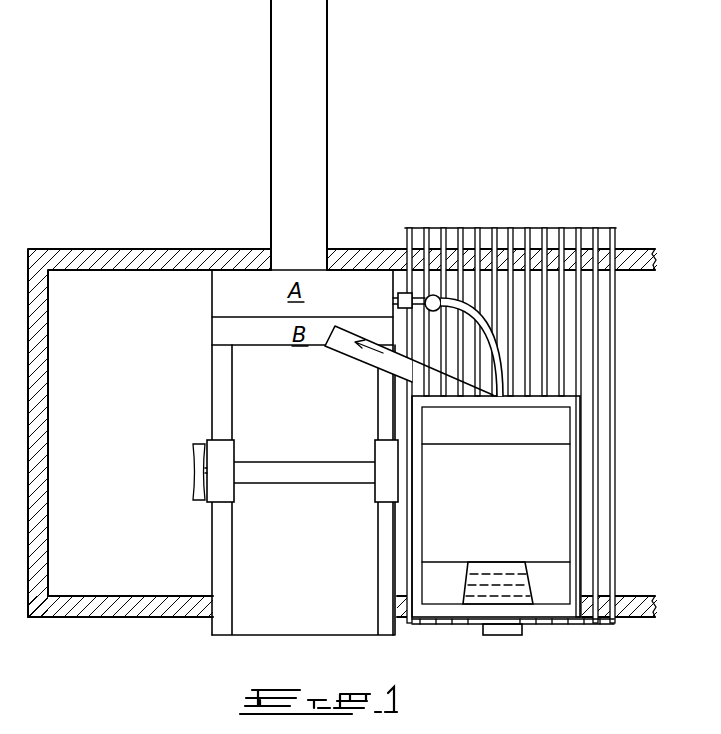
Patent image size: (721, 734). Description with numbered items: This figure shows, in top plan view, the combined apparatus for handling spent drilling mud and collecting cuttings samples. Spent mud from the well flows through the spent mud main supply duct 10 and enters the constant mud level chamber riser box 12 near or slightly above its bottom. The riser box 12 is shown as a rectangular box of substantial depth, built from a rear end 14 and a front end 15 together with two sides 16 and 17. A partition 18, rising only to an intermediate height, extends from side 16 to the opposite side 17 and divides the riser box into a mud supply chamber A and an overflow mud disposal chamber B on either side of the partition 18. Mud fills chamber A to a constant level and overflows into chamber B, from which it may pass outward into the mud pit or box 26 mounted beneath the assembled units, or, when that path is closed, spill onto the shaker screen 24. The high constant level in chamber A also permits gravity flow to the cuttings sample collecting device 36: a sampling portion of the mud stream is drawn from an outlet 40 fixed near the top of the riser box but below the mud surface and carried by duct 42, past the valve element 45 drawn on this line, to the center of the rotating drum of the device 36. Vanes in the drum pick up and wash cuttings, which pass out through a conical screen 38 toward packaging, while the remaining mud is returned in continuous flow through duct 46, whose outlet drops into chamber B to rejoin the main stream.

The spent mud main supply duct 10 is at (277, 69).
The constant mud level chamber riser box 12 is at (262, 303).
The rear end 14 is at (235, 270).
The front end 15 is at (215, 345).
The side 16 is at (211, 287).
The side 17 is at (393, 278).
The partition 18 is at (305, 318).
The shaker screen 24 is at (320, 561).
The mud pit or box 26 is at (164, 618).
The cuttings sample collecting device 36 is at (513, 498).
The conical screen 38 is at (464, 575).
The outlet 40 is at (393, 301).
The duct 42 is at (506, 381).
The valve 45 is at (437, 311).
The duct 46 is at (367, 362).